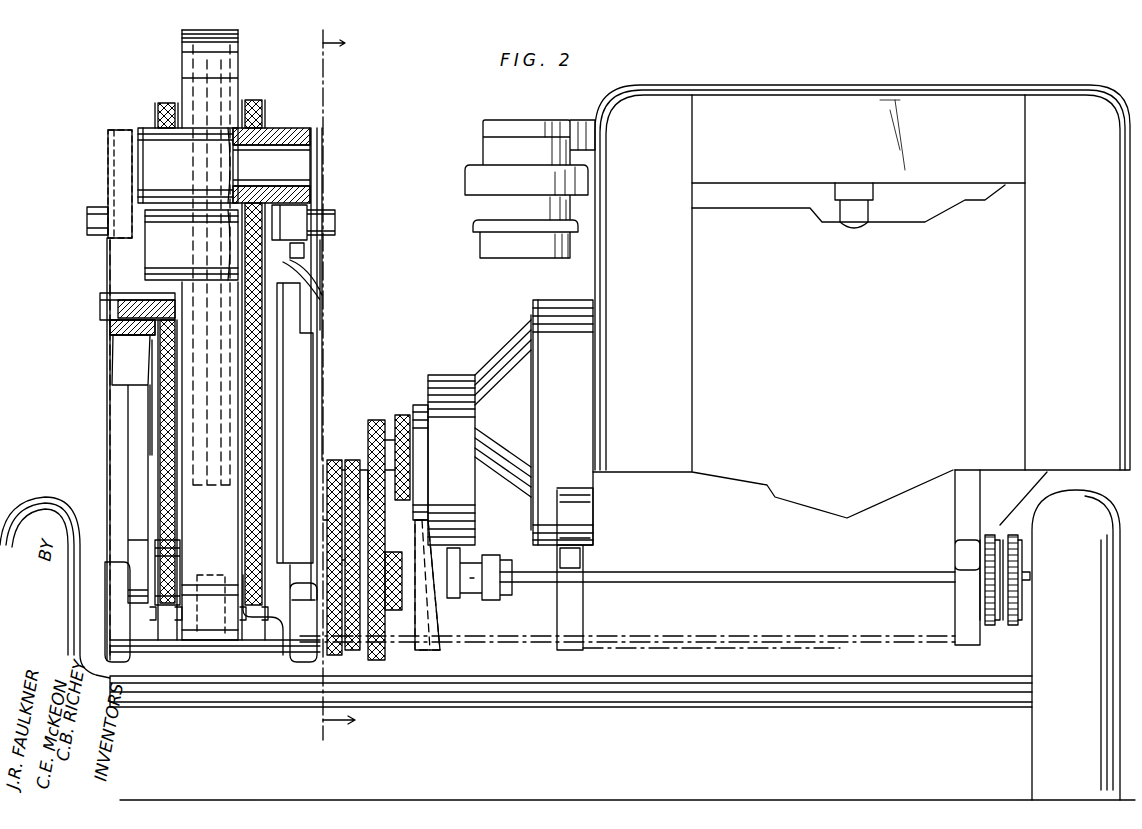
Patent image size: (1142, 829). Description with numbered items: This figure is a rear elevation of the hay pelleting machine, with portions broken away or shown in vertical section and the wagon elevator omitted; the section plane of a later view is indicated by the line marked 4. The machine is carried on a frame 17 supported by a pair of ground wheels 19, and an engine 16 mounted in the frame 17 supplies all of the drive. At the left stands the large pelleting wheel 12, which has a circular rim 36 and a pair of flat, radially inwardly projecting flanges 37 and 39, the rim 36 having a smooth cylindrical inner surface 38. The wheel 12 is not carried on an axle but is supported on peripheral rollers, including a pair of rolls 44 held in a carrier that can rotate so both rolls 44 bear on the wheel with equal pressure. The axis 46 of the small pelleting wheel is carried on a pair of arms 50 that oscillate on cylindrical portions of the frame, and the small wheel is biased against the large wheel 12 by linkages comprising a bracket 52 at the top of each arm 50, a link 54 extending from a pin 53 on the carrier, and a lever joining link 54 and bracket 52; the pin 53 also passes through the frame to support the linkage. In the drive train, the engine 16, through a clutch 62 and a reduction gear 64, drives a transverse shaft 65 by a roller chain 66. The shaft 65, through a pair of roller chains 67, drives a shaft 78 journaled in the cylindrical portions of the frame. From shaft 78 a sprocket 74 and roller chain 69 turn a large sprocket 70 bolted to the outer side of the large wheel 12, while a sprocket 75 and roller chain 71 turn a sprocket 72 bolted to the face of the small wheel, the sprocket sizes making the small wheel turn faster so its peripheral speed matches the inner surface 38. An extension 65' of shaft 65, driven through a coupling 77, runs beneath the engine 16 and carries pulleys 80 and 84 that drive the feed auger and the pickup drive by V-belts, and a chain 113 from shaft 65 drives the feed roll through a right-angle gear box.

The large pelleting wheel 12 is at (180, 42).
The circular rim 36 is at (240, 28).
The outside flange 37 is at (182, 66).
The inner surface 38 is at (240, 60).
The flange 39 is at (238, 88).
The roller chain 69 is at (158, 112).
The sprocket 72 is at (262, 115).
The peripheral rolls 44 is at (224, 204).
The pin 53 is at (87, 222).
The link 54 is at (305, 250).
The bracket 52 is at (312, 284).
The axis 46 is at (108, 303).
The arms 50 is at (137, 401).
The large sprocket 70 is at (155, 448).
The roller chain 71 is at (250, 488).
The supporting ground wheels 19 is at (42, 490).
The frame 17 is at (860, 696).
The engine 16 is at (1050, 105).
The sprocket 74 is at (165, 605).
The shaft 78 is at (248, 600).
The sprocket 75 is at (290, 625).
The roller chains 67 is at (327, 465).
The roller chain 66 is at (378, 420).
The chain 113 is at (392, 552).
The shaft 65 is at (439, 585).
The coupling 77 is at (484, 598).
The reduction gear 64 is at (440, 380).
The clutch 62 is at (508, 352).
The shaft extension 65' is at (727, 590).
The pulley 80 is at (990, 628).
The pulley 84 is at (1014, 628).
The section line 4- 4 is at (345, 390).